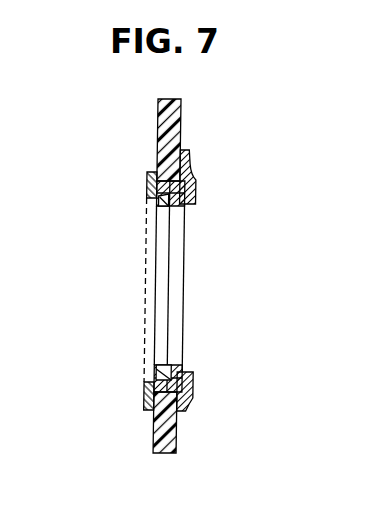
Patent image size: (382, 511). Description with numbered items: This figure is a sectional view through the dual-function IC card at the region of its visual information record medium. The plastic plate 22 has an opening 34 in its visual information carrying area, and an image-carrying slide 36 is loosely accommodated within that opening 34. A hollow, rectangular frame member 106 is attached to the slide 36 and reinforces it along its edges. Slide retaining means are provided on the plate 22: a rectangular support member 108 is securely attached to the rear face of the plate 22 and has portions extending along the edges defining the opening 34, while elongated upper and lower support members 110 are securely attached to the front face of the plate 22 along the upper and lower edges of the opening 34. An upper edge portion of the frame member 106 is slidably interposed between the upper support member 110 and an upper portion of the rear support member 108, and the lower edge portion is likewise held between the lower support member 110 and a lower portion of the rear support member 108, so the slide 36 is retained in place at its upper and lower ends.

The plastic plate 22 is at (158, 114).
The opening 34 is at (151, 190).
The image-carrying slide 36 is at (185, 293).
The frame member 106 is at (164, 212).
The rectangular support member 108 is at (157, 196).
The upper support member 110 is at (194, 190).